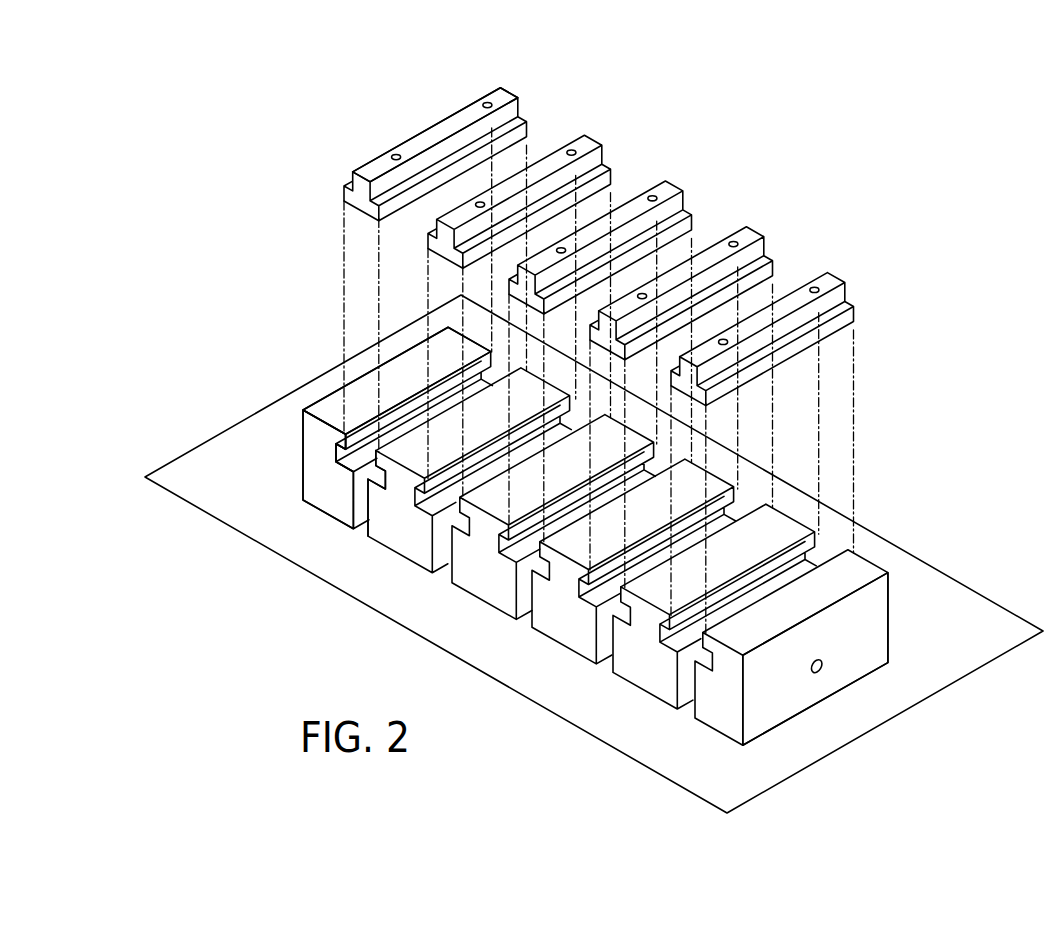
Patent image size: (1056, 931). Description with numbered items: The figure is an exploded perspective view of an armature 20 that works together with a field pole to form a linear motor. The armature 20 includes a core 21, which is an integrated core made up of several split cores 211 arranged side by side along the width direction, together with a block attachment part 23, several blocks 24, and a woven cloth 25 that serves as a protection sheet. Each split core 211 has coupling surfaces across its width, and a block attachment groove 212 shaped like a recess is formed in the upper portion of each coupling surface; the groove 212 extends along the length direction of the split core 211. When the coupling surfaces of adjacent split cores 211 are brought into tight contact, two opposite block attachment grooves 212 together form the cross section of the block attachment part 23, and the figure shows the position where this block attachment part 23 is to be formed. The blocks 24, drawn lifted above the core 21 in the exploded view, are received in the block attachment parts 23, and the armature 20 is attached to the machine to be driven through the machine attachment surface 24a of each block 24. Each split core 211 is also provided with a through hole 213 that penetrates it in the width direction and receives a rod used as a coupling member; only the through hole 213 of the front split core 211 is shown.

The armature 20 is at (594, 432).
The core 21 is at (289, 496).
The split core 211 is at (313, 468).
The block attachment groove 212 is at (348, 463).
The through hole 213 is at (821, 674).
The block attachment part 23 is at (414, 384).
The block 24 is at (455, 122).
The machine attachment surface 24a is at (407, 148).
The woven cloth 25 is at (975, 605).